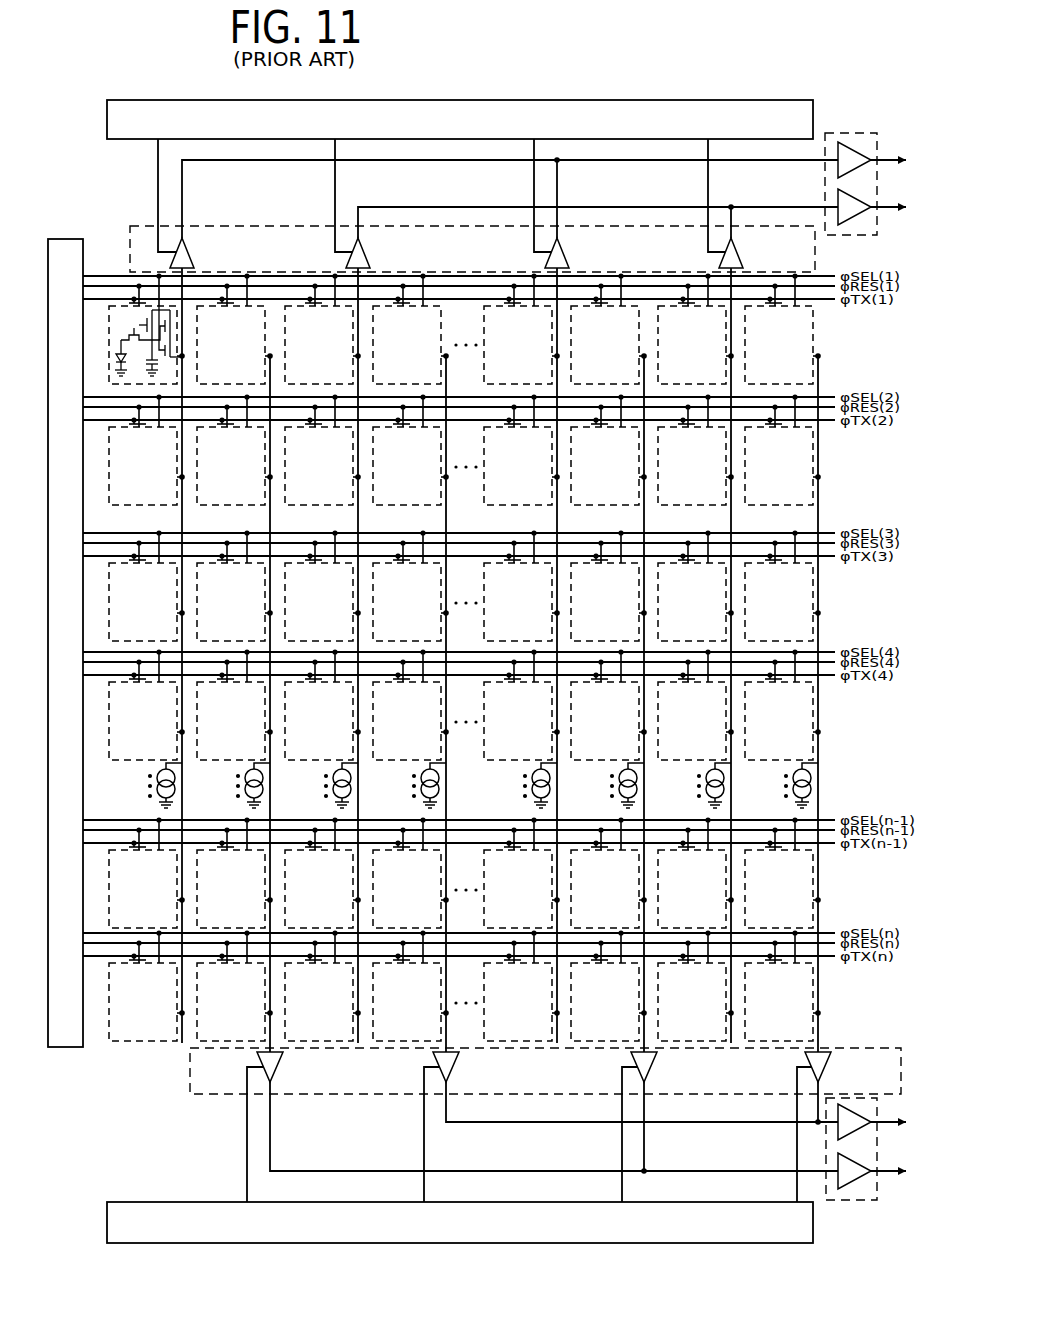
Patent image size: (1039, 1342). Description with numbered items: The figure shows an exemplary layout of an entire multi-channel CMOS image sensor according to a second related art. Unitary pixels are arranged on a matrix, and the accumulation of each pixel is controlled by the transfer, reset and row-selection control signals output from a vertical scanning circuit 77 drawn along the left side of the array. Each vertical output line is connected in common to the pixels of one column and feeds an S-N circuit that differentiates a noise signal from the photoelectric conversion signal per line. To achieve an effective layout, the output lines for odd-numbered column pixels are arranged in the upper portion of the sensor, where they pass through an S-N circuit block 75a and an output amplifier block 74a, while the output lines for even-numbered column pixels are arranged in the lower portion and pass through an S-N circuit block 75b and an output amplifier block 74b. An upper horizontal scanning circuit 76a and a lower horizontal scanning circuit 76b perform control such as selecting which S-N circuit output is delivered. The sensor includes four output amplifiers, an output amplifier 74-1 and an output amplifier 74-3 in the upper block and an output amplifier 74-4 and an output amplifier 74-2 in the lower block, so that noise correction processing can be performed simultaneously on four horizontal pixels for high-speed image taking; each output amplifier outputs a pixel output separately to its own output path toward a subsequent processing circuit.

The vertical scanning circuit 77 is at (47, 238).
The horizontal scanning circuit 76a is at (467, 100).
The horizontal scanning circuit 76b is at (500, 1243).
The S-N circuit block 75a is at (262, 226).
The S-N circuit block 75b is at (213, 1095).
The output amplifier block 74a is at (846, 133).
The output amplifier block 74b is at (886, 1200).
The output amplifier 74-1 is at (838, 166).
The output amplifier 74-2 is at (838, 1177).
The output amplifier 74-3 is at (838, 201).
The output amplifier 74-4 is at (838, 1128).